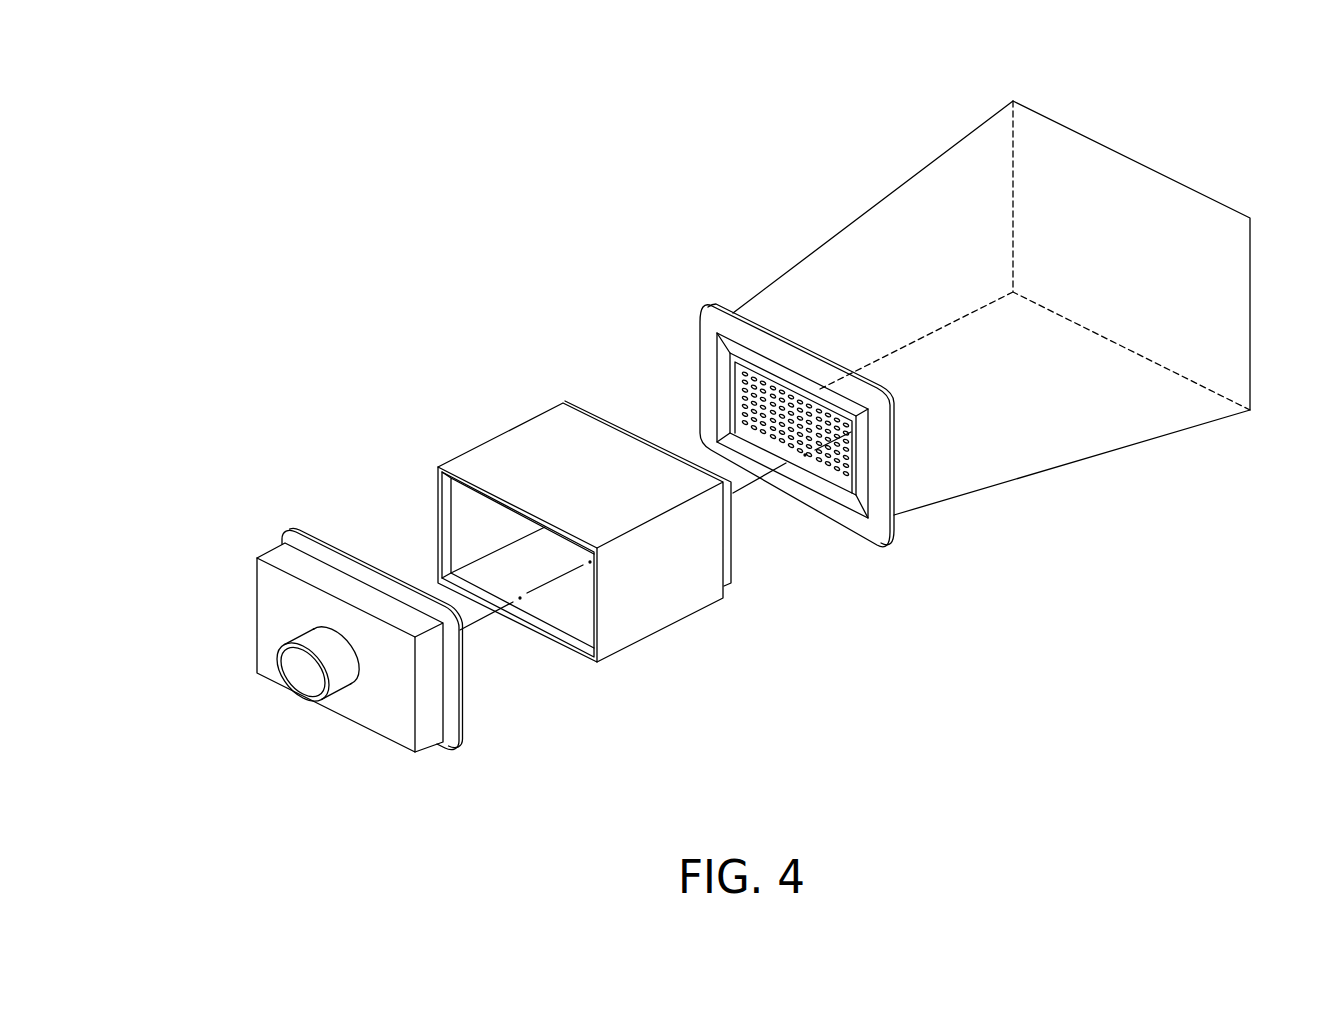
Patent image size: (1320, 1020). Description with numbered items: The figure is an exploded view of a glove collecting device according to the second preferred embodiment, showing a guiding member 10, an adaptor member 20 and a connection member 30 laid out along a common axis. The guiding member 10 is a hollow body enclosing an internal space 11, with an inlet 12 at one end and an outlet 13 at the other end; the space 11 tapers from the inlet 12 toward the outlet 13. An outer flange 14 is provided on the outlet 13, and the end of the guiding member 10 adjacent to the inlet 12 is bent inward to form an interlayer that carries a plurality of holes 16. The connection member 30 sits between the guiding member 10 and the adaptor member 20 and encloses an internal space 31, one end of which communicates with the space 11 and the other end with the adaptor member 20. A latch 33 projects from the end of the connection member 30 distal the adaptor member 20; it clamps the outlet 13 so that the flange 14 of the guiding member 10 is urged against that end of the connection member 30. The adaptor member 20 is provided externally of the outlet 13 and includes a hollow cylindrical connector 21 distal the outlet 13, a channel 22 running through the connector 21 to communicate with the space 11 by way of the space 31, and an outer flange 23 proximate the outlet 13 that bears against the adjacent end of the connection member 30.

The guiding member 10 is at (842, 255).
The internal space 11 is at (962, 197).
The inlet 12 is at (1117, 228).
The outlet 13 is at (746, 413).
The outer flange 14 is at (706, 321).
The holes 16 is at (830, 463).
The adaptor member 20 is at (335, 558).
The connector 21 is at (313, 638).
The channel 22 is at (301, 679).
The outer flange 23 is at (282, 535).
The connection member 30 is at (533, 447).
The internal space 31 is at (513, 555).
The latch 33 is at (585, 405).